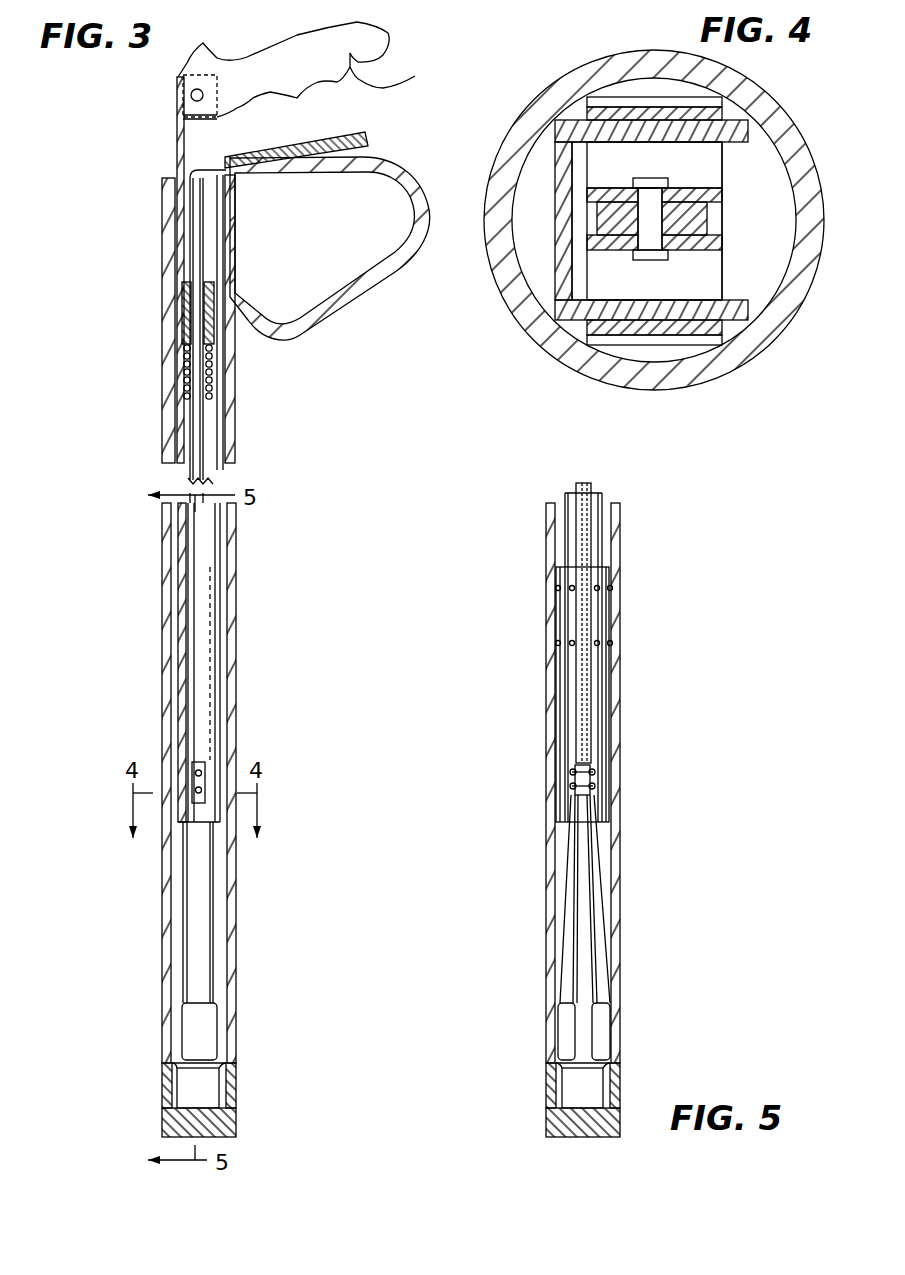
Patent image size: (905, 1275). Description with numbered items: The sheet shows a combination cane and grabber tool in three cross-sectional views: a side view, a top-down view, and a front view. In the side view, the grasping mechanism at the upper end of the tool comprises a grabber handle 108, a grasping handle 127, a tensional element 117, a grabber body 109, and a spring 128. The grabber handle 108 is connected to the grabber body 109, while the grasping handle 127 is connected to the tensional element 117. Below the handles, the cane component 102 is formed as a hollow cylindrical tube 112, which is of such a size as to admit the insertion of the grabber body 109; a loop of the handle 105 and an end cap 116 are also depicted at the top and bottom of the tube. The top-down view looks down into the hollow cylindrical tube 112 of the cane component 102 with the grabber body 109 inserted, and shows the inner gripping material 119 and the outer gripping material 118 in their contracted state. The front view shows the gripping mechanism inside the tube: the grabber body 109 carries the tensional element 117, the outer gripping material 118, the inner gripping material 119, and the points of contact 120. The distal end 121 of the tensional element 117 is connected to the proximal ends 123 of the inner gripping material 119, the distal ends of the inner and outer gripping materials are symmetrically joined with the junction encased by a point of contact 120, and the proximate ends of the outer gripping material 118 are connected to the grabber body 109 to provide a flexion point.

In FIG. 3, the cane component 102 is at (230, 572).
In FIG. 4, the cane component 102 is at (667, 383).
In FIG. 5, the cane component 102 is at (583, 783).
In FIG. 3, the handle loop tube 105 is at (367, 283).
In FIG. 3, the grabber handle 108 is at (415, 76).
In FIG. 3, the grabber body 109 is at (201, 289).
In FIG. 4, the grabber body 109 is at (577, 123).
In FIG. 5, the grabber body 109 is at (597, 538).
In FIG. 3, the hollow cylindrical tube 112 is at (228, 652).
In FIG. 4, the hollow cylindrical tube 112 is at (715, 373).
In FIG. 3, the end cap 116 is at (236, 1102).
In FIG. 5, the end cap 116 is at (620, 1087).
In FIG. 5, the tensional element 117 is at (587, 612).
In FIG. 4, the outer gripping material 118 is at (665, 100).
In FIG. 5, the outer gripping material 118 is at (610, 920).
In FIG. 4, the inner gripping material 119 is at (643, 162).
In FIG. 5, the inner gripping material 119 is at (597, 877).
In FIG. 5, the point of contact 120 is at (600, 1032).
In FIG. 5, the distal end of the tensional element 121 is at (578, 773).
In FIG. 5, the proximal ends of the inner gripping material 123 is at (590, 786).
In FIG. 3, the grasping handle 127 is at (335, 142).
In FIG. 3, the spring 128 is at (210, 382).